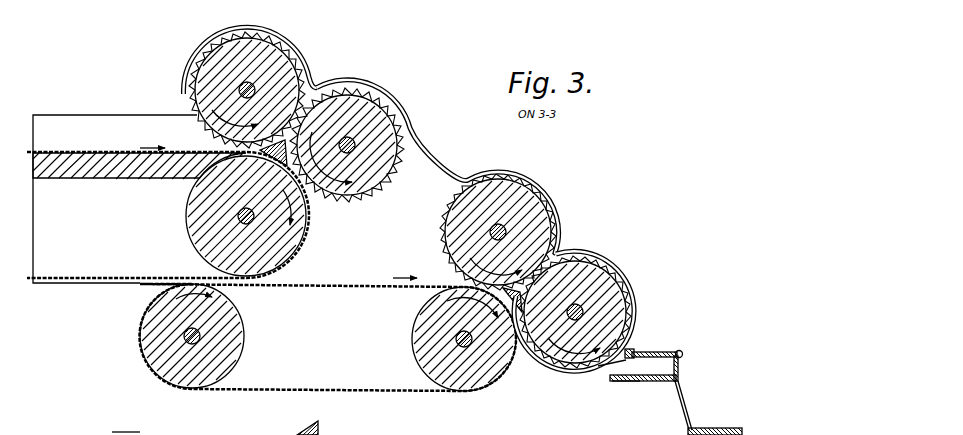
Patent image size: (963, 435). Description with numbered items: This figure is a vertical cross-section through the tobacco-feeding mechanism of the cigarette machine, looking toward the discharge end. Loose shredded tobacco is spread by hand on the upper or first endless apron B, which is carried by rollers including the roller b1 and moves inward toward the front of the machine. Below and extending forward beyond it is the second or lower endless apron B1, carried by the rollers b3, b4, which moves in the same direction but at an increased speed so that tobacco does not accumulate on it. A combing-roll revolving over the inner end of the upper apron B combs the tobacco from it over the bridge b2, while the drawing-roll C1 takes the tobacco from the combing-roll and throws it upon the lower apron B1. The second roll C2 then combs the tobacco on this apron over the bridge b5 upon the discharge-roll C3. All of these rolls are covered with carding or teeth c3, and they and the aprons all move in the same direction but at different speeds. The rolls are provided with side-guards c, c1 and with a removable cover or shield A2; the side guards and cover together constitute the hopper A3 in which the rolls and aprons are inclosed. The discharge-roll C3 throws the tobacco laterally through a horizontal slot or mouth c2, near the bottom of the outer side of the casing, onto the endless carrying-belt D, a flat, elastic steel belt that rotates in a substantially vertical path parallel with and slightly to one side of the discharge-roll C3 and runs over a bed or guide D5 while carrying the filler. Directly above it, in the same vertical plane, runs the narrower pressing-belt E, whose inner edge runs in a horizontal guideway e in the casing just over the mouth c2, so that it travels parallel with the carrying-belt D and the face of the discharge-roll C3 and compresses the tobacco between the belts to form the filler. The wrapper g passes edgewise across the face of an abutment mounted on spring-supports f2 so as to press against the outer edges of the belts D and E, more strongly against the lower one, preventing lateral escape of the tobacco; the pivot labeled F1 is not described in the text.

The removable cover or shield A2 is at (460, 165).
The hopper A3 is at (388, 67).
The upper or first endless apron B is at (168, 203).
The second or lower endless apron B1 is at (328, 323).
The roller b1 is at (246, 216).
The bridge b2 is at (273, 135).
The roller b3 is at (203, 336).
The roller b4 is at (455, 339).
The bridge b5 is at (480, 335).
The side-guard c is at (247, 90).
The drawing-roll C1 is at (347, 145).
The side-guard c1 is at (455, 262).
The second roll C2 is at (498, 232).
The discharge-roll C3 is at (575, 312).
The horizontal slot or mouth c2 is at (610, 364).
The carding or teeth c3 is at (637, 300).
The carrying-belt D is at (643, 390).
The bed or guide D5 is at (644, 388).
The pressing-belt E is at (654, 346).
The horizontal guideway e is at (632, 350).
The pivot F1 is at (682, 363).
The wrapper g is at (670, 379).
The spring-support f2 is at (688, 403).